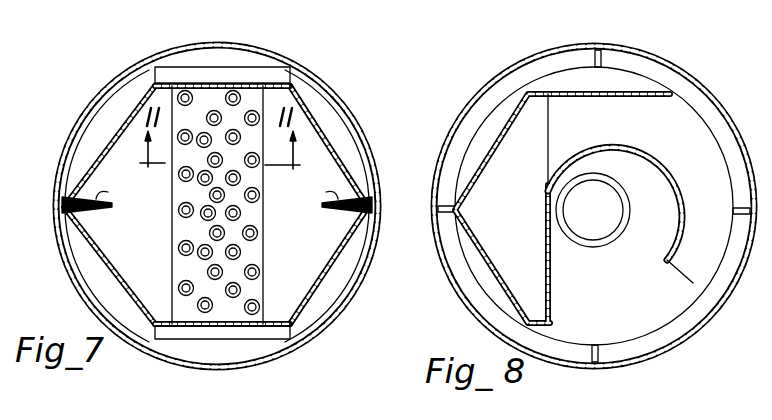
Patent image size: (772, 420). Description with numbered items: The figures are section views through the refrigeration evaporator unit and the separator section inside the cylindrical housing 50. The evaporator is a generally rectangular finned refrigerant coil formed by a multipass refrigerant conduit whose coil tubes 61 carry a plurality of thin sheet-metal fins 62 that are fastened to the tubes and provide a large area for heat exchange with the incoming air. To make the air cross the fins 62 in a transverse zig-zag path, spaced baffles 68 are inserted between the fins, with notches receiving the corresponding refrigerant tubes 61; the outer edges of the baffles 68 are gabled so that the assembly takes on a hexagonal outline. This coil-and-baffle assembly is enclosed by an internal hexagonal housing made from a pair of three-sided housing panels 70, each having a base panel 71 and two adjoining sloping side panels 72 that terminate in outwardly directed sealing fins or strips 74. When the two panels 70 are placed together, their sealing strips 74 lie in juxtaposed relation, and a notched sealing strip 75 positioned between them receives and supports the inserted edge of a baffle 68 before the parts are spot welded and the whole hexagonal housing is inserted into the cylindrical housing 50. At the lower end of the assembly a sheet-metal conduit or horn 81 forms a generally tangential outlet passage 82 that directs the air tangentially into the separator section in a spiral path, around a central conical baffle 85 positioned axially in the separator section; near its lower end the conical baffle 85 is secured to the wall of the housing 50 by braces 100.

In FIG. 7, the cylindrical housing 50 is at (168, 358).
In FIG. 8, the cylindrical housing 50 is at (720, 103).
In FIG. 7, the refrigerant conduit 61 is at (183, 247).
In FIG. 7, the fins 62 is at (257, 98).
In FIG. 7, the baffles 68 is at (147, 238).
In FIG. 7, the housing panels 70 is at (183, 80).
In FIG. 7, the base panel 71 is at (242, 52).
In FIG. 7, the side panels 72 is at (335, 128).
In FIG. 8, the side panels 72 is at (480, 258).
In FIG. 7, the sealing fin or strip 74 is at (62, 222).
In FIG. 7, the notched sealing strip 75 is at (106, 195).
In FIG. 8, the baffle 81 is at (608, 142).
In FIG. 8, the tangential outlet passage 82 is at (700, 270).
In FIG. 8, the central conical baffle 85 is at (617, 232).
In FIG. 8, the braces 100 is at (580, 370).